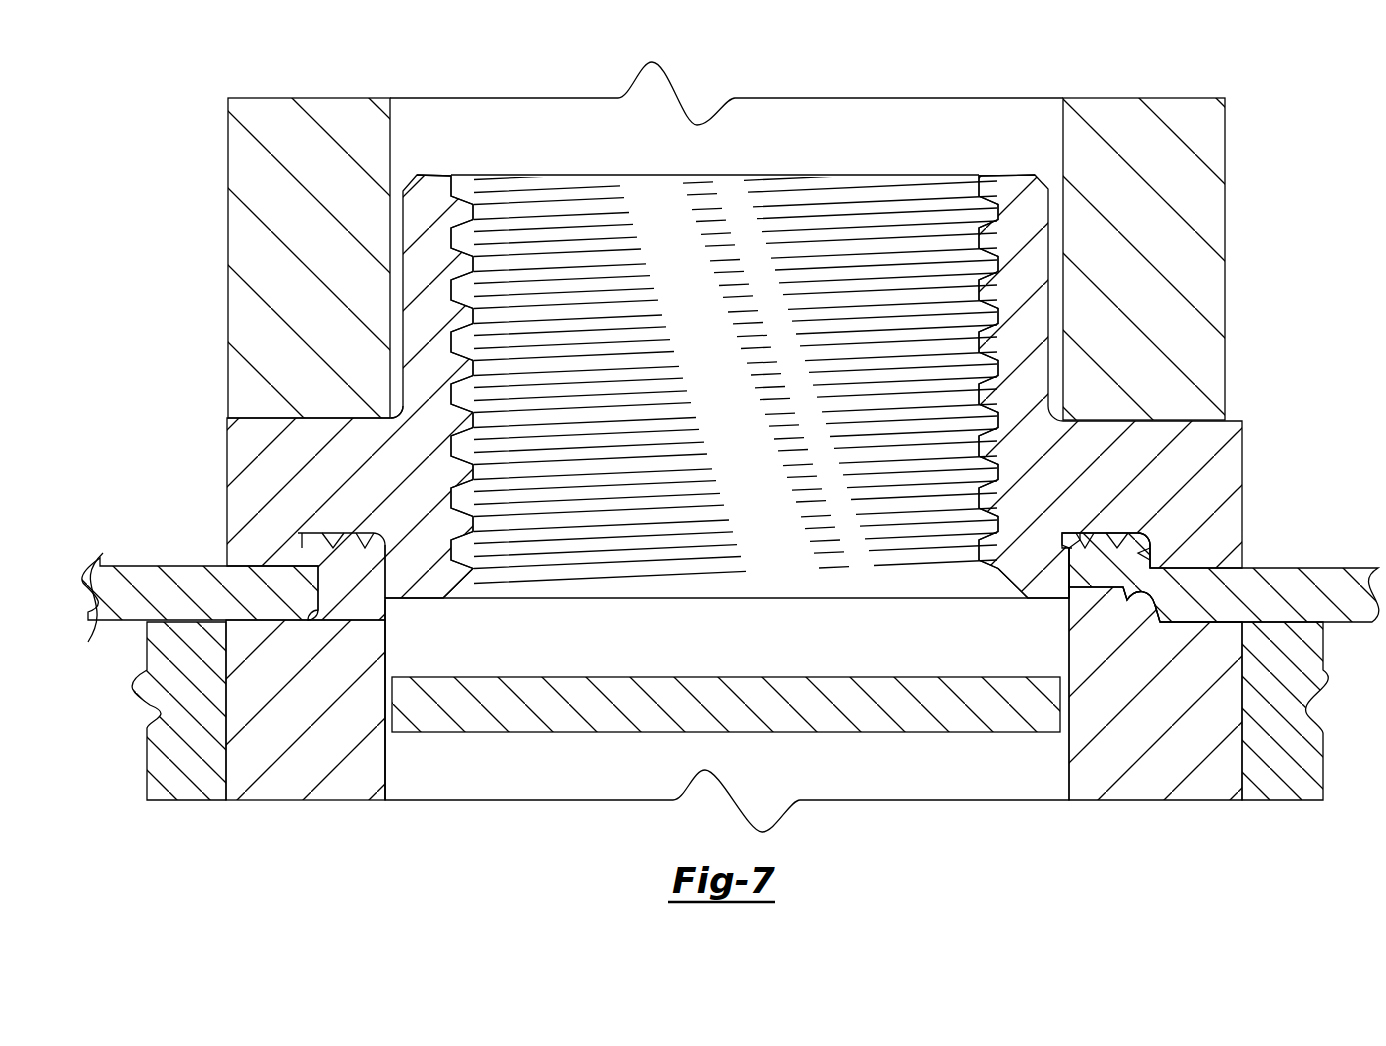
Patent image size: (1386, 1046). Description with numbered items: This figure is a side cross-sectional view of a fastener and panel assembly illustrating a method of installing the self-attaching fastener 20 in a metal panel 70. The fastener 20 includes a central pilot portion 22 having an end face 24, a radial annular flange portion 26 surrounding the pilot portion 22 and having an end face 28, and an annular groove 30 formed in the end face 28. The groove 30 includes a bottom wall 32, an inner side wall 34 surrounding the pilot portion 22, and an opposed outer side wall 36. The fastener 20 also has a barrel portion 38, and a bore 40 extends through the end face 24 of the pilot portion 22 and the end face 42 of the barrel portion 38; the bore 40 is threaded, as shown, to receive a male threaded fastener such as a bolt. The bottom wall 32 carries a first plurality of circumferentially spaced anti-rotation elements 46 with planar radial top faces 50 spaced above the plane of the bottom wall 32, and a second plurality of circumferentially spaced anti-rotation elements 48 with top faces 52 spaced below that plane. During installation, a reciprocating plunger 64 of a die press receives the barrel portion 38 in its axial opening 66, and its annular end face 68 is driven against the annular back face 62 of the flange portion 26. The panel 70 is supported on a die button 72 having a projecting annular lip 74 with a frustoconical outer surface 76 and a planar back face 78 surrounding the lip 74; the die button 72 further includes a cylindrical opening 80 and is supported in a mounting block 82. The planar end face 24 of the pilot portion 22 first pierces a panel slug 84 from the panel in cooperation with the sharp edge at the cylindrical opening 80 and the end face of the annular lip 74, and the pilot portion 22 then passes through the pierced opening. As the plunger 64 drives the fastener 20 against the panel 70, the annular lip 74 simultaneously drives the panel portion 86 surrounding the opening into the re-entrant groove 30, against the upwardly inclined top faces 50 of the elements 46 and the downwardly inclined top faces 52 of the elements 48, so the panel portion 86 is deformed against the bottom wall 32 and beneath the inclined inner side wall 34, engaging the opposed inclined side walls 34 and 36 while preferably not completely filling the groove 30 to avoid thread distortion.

The self-attaching fastener 20 is at (828, 158).
The central pilot portion 22 is at (440, 572).
The end face of pilot portion 24 is at (410, 600).
The radial annular flange portion 26 is at (238, 447).
The end face of flange portion 28 is at (247, 597).
The annular groove 30 is at (346, 560).
The bottom wall 32 is at (362, 533).
The inner side wall 34 is at (1062, 546).
The outer side wall 36 is at (1175, 553).
The barrel portion 38 is at (431, 198).
The bore 40 is at (572, 245).
The end face of barrel portion 42 is at (1005, 168).
The first plurality of anti-rotation elements 46 is at (306, 533).
The second plurality of anti-rotation elements 48 is at (1078, 553).
The top face of first anti-rotation elements 50 is at (343, 545).
The top face of second anti-rotation elements 52 is at (1072, 540).
The annular back face of flange portion 62 is at (1173, 421).
The reciprocating plunger 64 is at (1208, 283).
The axial opening of plunger 66 is at (1063, 130).
The annular end face of plunger 68 is at (323, 420).
The panel 70 is at (1332, 578).
The die button 72 is at (1158, 782).
The projecting annular lip 74 is at (1098, 617).
The frustoconical outer surface 76 is at (1147, 610).
The planar back face of die button 78 is at (1208, 600).
The cylindrical opening of die button 80 is at (385, 762).
The mounting block 82 is at (197, 777).
The panel slug 84 is at (632, 712).
The panel portion 86 is at (1130, 545).